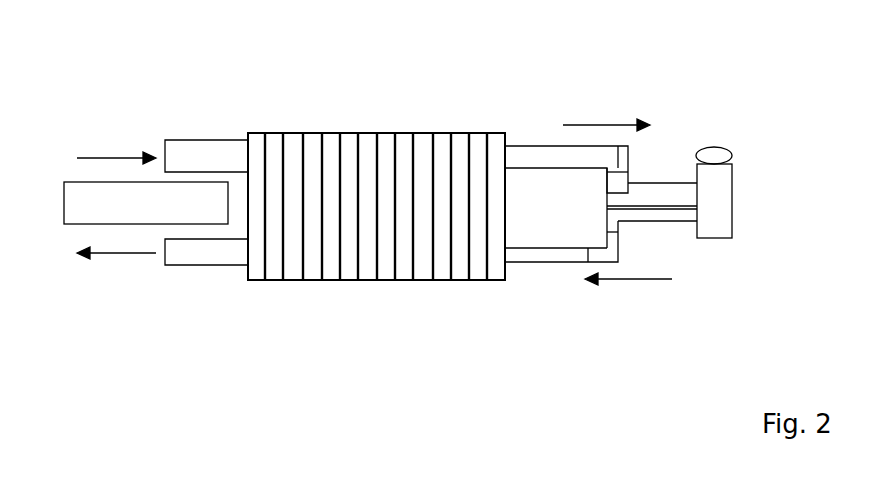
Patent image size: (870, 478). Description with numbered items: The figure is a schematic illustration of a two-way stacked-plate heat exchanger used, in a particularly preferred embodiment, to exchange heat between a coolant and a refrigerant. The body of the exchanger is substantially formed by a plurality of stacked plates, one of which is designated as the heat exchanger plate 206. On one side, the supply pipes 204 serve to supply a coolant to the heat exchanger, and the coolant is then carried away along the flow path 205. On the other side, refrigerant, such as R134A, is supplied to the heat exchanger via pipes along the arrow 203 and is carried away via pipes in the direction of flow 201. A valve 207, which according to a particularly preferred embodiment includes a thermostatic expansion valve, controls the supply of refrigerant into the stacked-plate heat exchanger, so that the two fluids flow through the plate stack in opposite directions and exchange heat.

The direction of flow 201 is at (579, 125).
The arrow 203 is at (658, 273).
The supply pipes 204 is at (205, 147).
The flow path 205 is at (215, 253).
The heat exchanger plate 206 is at (350, 273).
The valve 207 is at (725, 177).